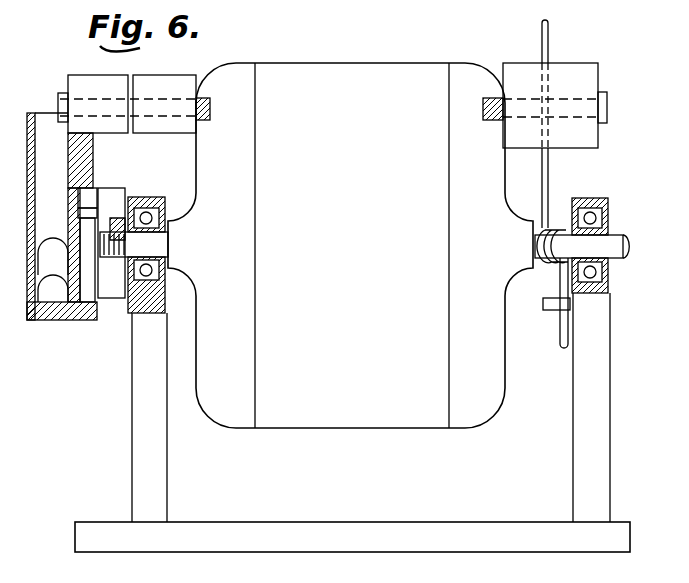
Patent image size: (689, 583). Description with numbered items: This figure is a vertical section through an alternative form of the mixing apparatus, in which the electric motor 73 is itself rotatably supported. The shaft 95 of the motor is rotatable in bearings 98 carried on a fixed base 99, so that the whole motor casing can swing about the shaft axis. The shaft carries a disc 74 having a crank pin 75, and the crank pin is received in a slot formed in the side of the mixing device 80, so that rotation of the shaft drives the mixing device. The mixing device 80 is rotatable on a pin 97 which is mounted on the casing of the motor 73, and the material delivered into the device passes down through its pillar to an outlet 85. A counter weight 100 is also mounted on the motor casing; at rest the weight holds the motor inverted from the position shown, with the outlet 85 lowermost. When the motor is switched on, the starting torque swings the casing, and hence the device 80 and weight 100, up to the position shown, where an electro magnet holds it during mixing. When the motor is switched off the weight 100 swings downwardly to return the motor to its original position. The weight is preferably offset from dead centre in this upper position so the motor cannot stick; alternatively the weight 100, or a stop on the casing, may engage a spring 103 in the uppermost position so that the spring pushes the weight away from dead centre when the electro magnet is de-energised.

The electric motor 73 is at (330, 80).
The disc 74 is at (116, 289).
The crank pin 75 is at (94, 213).
The mixing device 80 is at (22, 162).
The outlet 85 is at (45, 108).
The shaft 95 is at (165, 243).
The pin 97 is at (156, 103).
The bearings 98 is at (158, 278).
The fixed base 99 is at (137, 418).
The counter weight 100 is at (572, 70).
The spring 103 is at (548, 166).